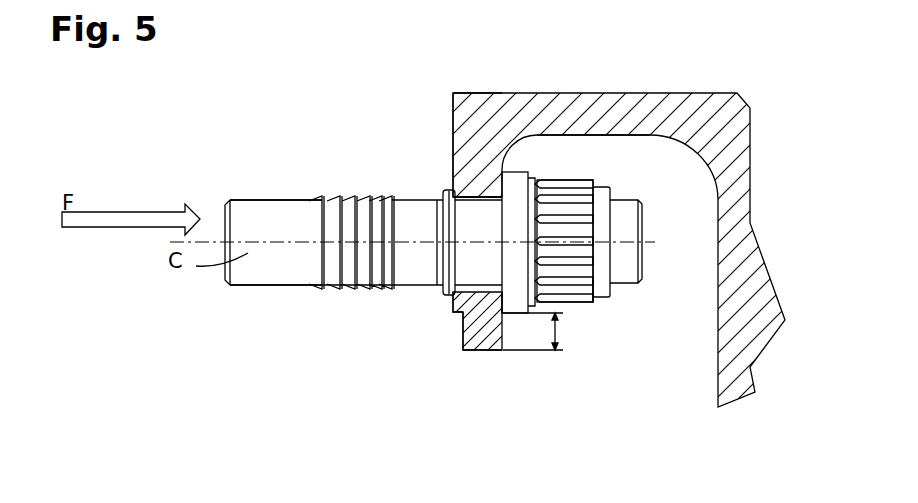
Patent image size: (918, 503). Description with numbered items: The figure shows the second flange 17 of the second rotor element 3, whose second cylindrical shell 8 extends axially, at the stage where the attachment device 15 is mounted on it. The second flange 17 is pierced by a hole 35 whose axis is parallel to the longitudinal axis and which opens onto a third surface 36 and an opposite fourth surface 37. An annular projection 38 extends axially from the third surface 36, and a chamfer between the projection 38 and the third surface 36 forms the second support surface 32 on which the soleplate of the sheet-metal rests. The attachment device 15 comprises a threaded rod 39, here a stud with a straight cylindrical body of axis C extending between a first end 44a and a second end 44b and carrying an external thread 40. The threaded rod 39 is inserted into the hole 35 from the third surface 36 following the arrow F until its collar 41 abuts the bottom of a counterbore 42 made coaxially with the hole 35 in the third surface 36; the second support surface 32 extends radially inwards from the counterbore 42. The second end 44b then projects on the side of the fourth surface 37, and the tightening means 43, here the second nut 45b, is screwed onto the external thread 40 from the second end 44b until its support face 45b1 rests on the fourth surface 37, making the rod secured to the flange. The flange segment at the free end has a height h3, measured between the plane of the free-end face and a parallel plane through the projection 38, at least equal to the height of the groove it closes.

The second rotor element 3 is at (722, 140).
The second cylindrical shell 8 is at (648, 133).
The attachment device 15 is at (279, 160).
The second flange 17 is at (482, 143).
The second support surface 32 is at (435, 328).
The hole 35 is at (475, 178).
The third surface 36 is at (437, 108).
The fourth surface 37 is at (522, 332).
The annular projection 38 is at (440, 322).
The threaded rod 39 is at (338, 225).
The external thread 40 is at (348, 289).
The collar 41 is at (442, 195).
The counterbore 42 is at (440, 278).
The tightening means 43 is at (617, 316).
The first end 44a is at (242, 220).
The second end 44b is at (625, 222).
The second nut 45b is at (557, 202).
The support face 45b1 is at (477, 322).
The height h3 is at (548, 331).